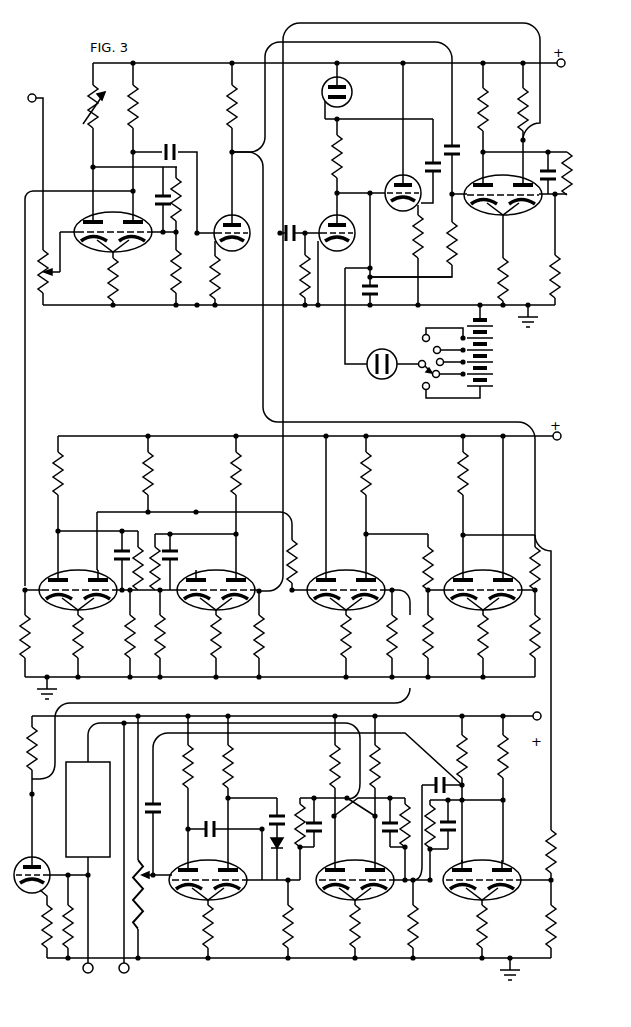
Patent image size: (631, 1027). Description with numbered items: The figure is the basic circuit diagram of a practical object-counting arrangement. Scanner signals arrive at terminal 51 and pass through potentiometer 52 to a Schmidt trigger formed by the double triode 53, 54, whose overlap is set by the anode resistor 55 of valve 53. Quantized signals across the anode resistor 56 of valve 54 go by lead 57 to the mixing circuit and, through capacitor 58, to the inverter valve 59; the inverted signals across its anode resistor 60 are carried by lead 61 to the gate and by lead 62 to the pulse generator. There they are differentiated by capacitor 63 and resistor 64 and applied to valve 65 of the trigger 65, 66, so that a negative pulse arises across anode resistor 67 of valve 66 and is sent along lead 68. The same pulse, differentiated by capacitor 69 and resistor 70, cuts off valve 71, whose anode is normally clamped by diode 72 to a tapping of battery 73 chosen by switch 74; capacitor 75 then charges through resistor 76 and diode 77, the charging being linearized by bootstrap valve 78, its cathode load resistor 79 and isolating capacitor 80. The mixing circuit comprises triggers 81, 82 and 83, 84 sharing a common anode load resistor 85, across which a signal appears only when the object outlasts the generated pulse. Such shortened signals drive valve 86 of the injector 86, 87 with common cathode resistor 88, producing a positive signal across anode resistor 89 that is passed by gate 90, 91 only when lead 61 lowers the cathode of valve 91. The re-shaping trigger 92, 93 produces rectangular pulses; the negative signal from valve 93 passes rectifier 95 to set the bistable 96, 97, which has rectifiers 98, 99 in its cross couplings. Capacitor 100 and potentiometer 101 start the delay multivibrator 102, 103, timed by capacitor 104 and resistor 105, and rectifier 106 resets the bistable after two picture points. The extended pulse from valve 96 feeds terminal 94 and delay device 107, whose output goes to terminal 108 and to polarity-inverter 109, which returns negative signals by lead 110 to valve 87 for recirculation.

The terminal 51 is at (33, 163).
The potentiometer 52 is at (55, 277).
The double triode half (valve) 53 is at (110, 250).
The double triode half (valve) 54 is at (123, 201).
The anode resistor 55 is at (84, 137).
The anode resistor 56 is at (145, 128).
The lead 57 is at (28, 379).
The capacitor 58 is at (165, 178).
The valve 59 is at (222, 228).
The anode resistor 60 is at (220, 109).
The lead 61 is at (262, 278).
The lead 62 is at (268, 48).
The capacitor 63 is at (459, 164).
The resistor 64 is at (422, 235).
The double triode half (valve) 65 is at (483, 181).
The double triode half (valve) 66 is at (514, 181).
The anode resistor 67 is at (503, 119).
The lead 68 is at (531, 48).
The capacitor 69 is at (294, 222).
The resistor 70 is at (299, 302).
The valve 71 is at (330, 249).
The diode 72 is at (380, 364).
The battery 73 is at (486, 360).
The switch 74 is at (422, 354).
The capacitor 75 is at (398, 278).
The resistor 76 is at (326, 156).
The diode 77 is at (349, 91).
The valve 78 is at (396, 137).
The cathode load resistor 79 is at (407, 255).
The isolating capacitor 80 is at (426, 161).
The double triode half (valve) 81 is at (71, 579).
The double triode half (valve) 82 is at (83, 559).
The double triode half (valve) 83 is at (216, 579).
The double triode half (valve) 84 is at (245, 503).
The common anode load resistor 85 is at (194, 503).
The double triode half (valve) 86 is at (301, 566).
The double triode half (valve) 87 is at (346, 579).
The common cathode resistor 88 is at (357, 645).
The anode resistor 89 is at (377, 503).
The double triode half (valve) 90 is at (475, 523).
The double triode half (valve) 91 is at (490, 500).
The double triode half (valve) 92 is at (507, 820).
The double triode half (valve) 93 is at (482, 837).
The terminal 94 is at (121, 860).
The rectifier 95 is at (420, 780).
The double triode half (valve) 96 is at (374, 818).
The double triode half (valve) 97 is at (354, 837).
The rectifier 98 is at (393, 799).
The rectifier 99 is at (310, 799).
The capacitor 100 is at (303, 805).
The potentiometer 101 is at (150, 837).
The double triode half (valve) 102 is at (234, 818).
The double triode half (valve) 103 is at (207, 909).
The capacitor 104 is at (222, 788).
The resistor 105 is at (260, 799).
The rectifier 106 is at (272, 864).
The delay device 107 is at (213, 841).
The output terminal 108 is at (84, 980).
The polarity-inverter 109 is at (36, 804).
The lead 110 is at (47, 761).